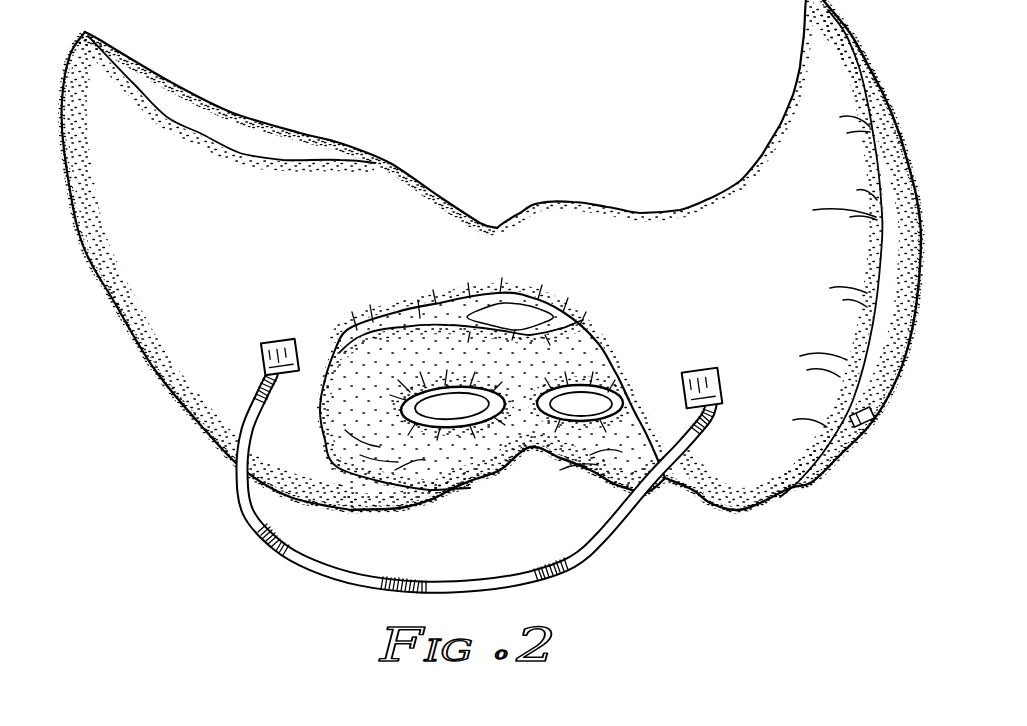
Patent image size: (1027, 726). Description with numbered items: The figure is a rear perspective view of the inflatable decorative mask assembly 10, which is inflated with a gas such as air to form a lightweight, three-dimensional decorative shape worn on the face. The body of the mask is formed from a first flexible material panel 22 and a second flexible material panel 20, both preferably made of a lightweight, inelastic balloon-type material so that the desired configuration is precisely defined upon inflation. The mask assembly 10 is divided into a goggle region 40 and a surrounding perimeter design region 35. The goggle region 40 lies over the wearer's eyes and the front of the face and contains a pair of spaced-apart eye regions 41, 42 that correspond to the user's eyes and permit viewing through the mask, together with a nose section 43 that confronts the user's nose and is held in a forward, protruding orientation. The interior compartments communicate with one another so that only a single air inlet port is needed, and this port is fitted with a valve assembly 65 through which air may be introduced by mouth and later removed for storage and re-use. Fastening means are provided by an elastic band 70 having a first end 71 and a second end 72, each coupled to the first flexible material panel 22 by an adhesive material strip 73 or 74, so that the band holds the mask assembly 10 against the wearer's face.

The inflatable decorative mask assembly 10 is at (491, 255).
The second flexible material panel 20 is at (238, 116).
The first flexible material panel 22 is at (178, 228).
The perimeter design region 35 is at (668, 264).
The goggle region 40 is at (492, 376).
The eye region 41 is at (428, 410).
The eye region 42 is at (584, 408).
The nose section 43 is at (530, 452).
The valve assembly 65 is at (876, 418).
The elastic band 70 is at (480, 477).
The first end 71 is at (254, 398).
The second end 72 is at (708, 419).
The adhesive material strip 73 is at (262, 349).
The adhesive material strip 74 is at (720, 392).